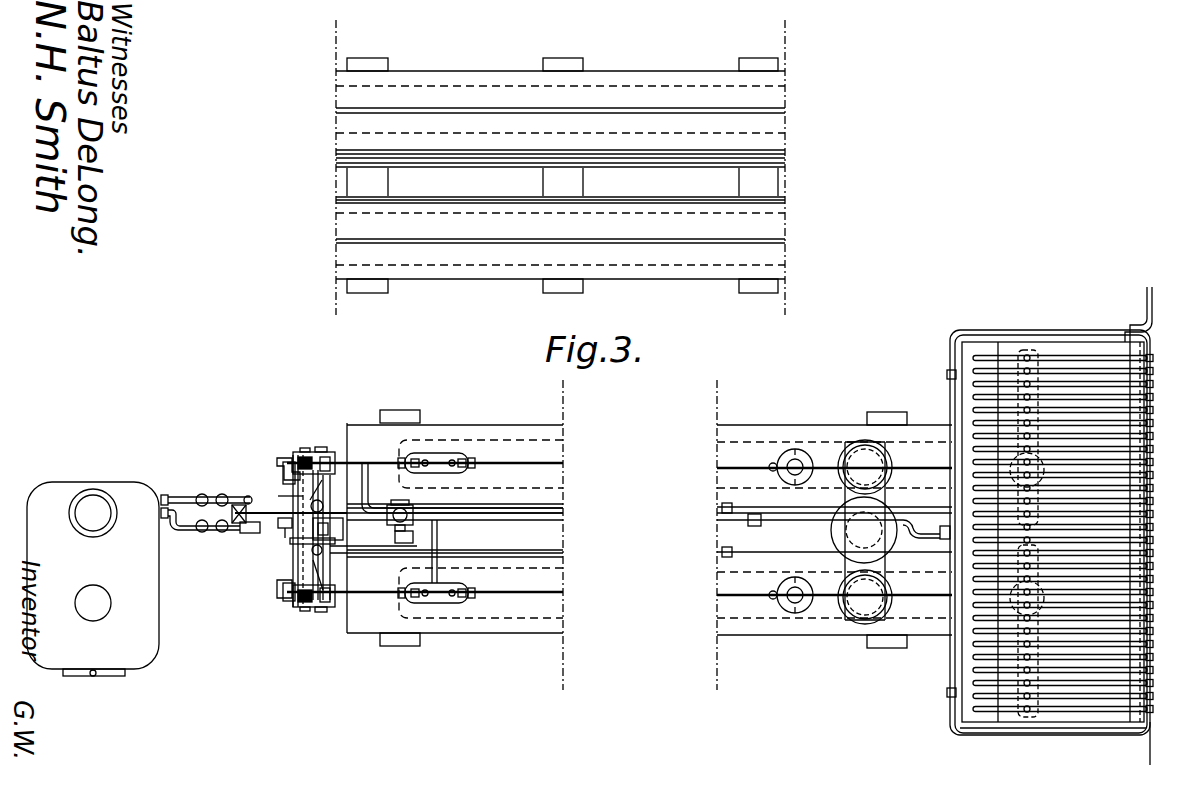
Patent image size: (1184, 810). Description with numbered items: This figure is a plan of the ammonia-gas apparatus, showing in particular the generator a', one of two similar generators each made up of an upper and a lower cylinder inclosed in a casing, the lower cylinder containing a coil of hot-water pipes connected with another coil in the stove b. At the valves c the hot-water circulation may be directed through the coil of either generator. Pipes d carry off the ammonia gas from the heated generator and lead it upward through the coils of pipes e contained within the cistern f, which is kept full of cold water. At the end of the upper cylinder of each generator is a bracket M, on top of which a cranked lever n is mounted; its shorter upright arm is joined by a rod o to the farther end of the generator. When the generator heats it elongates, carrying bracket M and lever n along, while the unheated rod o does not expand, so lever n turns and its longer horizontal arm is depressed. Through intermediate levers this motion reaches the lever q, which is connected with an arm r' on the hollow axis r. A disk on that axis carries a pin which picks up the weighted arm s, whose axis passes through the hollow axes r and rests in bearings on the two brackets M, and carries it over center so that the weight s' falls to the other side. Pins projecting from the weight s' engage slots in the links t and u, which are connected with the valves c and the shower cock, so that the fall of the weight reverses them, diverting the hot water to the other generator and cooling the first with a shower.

The generator a' is at (560, 415).
The stove b is at (93, 579).
The hot-water-circulation valve c is at (206, 503).
The pipe d is at (878, 532).
The coil of pipes e is at (1057, 511).
The cistern f is at (1055, 743).
The bracket M is at (337, 445).
The cranked lever n is at (312, 455).
The rod o is at (619, 343).
The lever q is at (288, 458).
The hollow axis r is at (294, 531).
The arm r' is at (272, 526).
The arm s is at (298, 520).
The weight s' is at (338, 529).
The link t is at (398, 505).
The link u is at (392, 548).